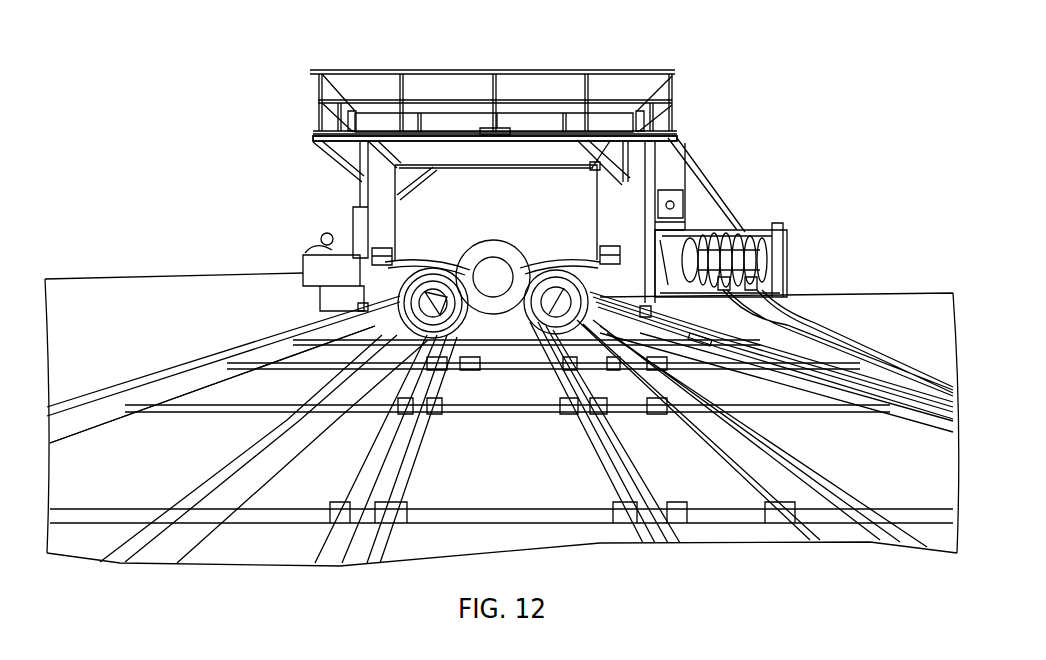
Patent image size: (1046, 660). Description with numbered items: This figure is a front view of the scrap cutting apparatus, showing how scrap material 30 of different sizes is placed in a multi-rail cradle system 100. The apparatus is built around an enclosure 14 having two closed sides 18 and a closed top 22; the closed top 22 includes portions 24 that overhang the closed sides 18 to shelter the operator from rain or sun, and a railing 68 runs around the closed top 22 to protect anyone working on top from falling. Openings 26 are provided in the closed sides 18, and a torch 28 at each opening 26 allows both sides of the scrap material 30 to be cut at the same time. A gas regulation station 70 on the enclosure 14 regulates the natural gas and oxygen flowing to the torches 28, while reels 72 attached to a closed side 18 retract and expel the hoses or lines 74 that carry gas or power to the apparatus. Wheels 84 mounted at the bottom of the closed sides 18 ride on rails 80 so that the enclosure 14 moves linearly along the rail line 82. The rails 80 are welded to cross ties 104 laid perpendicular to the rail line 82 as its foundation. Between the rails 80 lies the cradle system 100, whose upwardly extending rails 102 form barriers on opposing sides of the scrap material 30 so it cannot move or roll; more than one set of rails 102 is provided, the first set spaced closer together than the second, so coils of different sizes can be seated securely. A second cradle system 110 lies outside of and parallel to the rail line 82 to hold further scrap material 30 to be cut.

The enclosure 14 is at (291, 118).
The closed side 18 is at (362, 180).
The closed top 22 is at (405, 128).
The overhanging portion 24 is at (340, 147).
The opening 26 is at (390, 245).
The torch 28 is at (420, 270).
The scrap material 30 is at (495, 247).
The railing 68 is at (450, 70).
The gas regulation station 70 is at (672, 155).
The reel 72 is at (735, 240).
The cable 74 is at (787, 322).
The rail 80 is at (150, 363).
The rail line 82 is at (228, 336).
The wheel 84 is at (362, 308).
The cradle system 100 is at (407, 380).
The cradle rail 102 is at (300, 420).
The cross tie 104 is at (503, 412).
The second cradle system 110 is at (300, 395).